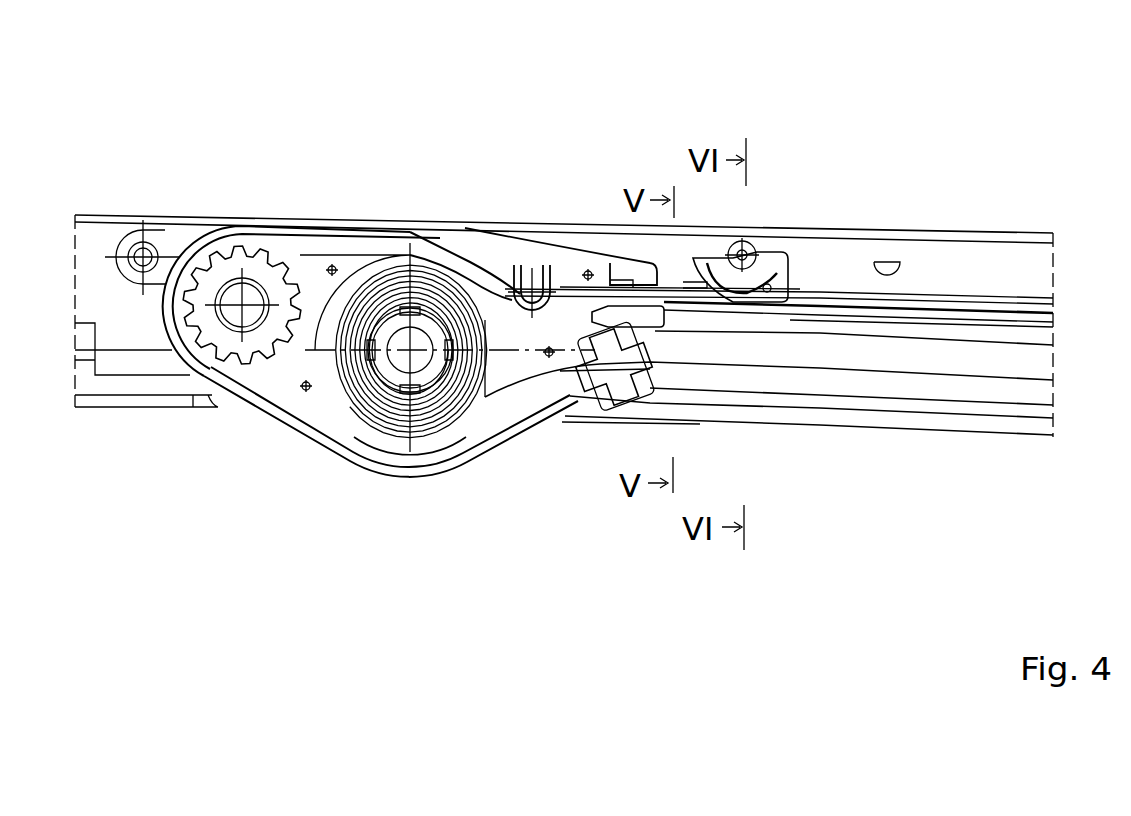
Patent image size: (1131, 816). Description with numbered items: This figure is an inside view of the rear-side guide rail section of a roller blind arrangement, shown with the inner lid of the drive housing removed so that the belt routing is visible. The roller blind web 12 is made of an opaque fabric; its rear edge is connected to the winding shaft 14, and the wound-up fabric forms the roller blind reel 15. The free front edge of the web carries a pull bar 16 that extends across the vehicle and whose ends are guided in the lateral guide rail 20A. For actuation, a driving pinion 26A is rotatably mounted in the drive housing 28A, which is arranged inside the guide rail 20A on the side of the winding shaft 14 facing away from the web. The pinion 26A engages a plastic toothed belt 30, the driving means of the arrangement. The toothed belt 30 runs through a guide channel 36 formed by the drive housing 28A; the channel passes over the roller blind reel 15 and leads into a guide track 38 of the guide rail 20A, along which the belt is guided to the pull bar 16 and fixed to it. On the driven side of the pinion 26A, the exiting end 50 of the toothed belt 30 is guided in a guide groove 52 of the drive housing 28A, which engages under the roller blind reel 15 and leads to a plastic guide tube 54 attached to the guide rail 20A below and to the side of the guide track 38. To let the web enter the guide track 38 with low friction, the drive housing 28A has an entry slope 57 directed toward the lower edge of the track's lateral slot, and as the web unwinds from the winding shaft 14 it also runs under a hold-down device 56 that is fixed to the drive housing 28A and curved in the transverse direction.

The roller blind web 12 is at (428, 255).
The winding shaft 14 is at (420, 395).
The roller blind reel 15 is at (337, 390).
The pull bar 16 is at (770, 250).
The guide rail 20A is at (933, 255).
The driving pinion 26A is at (180, 232).
The drive housing 28A is at (497, 253).
The toothed belt 30 is at (325, 248).
The guide channel 36 is at (297, 232).
The guide track 38 is at (828, 305).
The exiting end 50 is at (478, 430).
The guide groove 52 is at (330, 443).
The guide tube 54 is at (885, 360).
The hold-down device 56 is at (540, 266).
The entry slope 57 is at (600, 305).